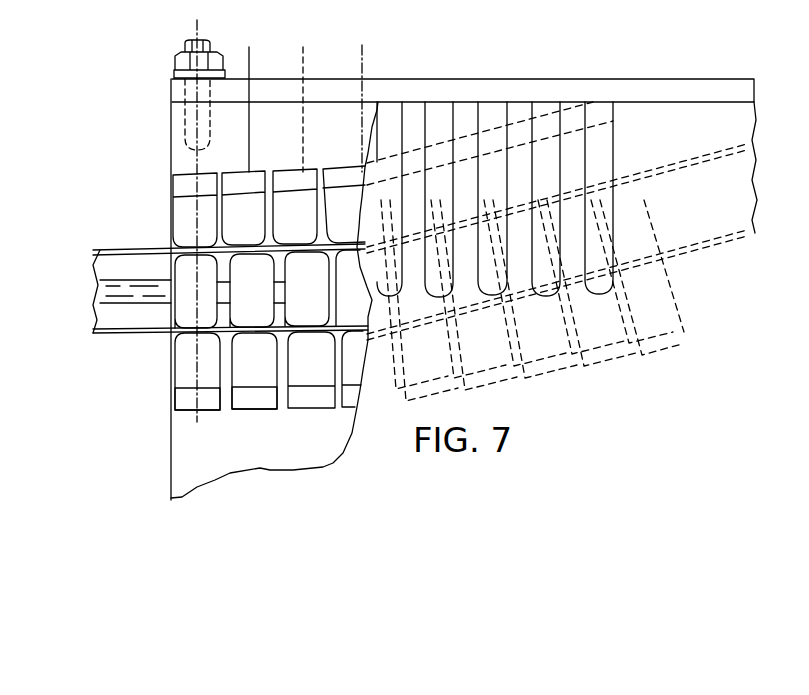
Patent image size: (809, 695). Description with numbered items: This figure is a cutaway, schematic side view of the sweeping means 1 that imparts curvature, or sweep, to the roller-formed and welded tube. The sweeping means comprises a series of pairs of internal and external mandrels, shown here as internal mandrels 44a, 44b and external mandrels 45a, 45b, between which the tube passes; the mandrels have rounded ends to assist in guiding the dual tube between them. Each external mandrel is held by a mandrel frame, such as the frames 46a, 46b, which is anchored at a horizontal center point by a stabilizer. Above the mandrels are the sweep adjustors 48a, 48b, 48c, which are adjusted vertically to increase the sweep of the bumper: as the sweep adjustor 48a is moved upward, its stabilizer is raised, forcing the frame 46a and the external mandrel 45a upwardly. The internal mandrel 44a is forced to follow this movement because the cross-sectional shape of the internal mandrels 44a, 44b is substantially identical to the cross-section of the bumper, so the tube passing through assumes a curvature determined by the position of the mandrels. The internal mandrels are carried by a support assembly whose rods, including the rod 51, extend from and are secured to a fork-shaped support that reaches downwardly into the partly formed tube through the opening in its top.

The crossbar assembly 1 is at (157, 242).
The internal mandrel 44a is at (214, 227).
The internal mandrel 44b is at (261, 227).
The external mandrel 45a is at (183, 354).
The external mandrel 45b is at (265, 373).
The mandrel frame 46a is at (210, 402).
The mandrel frame 46b is at (267, 402).
The sweep adjustor 48a is at (174, 73).
The sweep adjustor 48b is at (249, 50).
The sweep adjustor 48c is at (303, 50).
The rod 51 is at (121, 286).